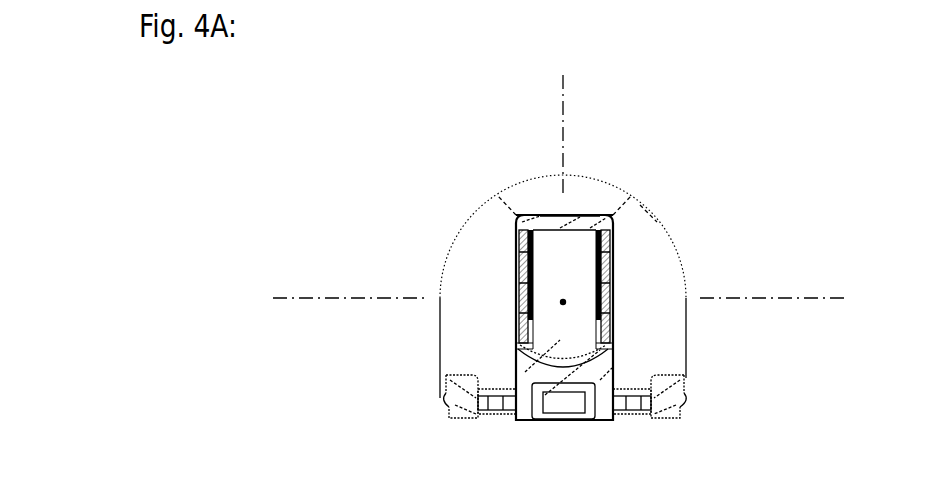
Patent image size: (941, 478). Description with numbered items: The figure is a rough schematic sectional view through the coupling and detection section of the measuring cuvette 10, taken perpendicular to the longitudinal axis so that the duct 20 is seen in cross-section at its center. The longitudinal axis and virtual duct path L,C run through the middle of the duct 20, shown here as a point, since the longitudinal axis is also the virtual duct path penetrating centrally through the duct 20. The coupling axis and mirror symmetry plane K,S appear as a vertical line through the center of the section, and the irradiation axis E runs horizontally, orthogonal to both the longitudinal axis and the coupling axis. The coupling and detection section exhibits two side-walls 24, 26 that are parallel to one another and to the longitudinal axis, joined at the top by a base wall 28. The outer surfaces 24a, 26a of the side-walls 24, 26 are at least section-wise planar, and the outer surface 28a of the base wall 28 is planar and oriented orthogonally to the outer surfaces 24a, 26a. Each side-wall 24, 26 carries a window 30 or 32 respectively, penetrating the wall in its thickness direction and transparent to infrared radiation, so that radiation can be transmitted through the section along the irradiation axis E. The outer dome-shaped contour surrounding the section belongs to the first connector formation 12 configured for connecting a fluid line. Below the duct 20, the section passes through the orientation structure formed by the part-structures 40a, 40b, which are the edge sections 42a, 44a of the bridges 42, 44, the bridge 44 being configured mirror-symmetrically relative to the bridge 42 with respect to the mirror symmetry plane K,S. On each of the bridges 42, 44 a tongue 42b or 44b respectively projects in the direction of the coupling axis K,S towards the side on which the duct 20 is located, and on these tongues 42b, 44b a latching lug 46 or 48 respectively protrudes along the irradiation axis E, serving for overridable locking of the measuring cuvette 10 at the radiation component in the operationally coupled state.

The measuring cuvette 10 is at (521, 262).
The first connector formation 12 is at (640, 203).
The duct 20 is at (580, 287).
The side-wall 24 is at (640, 286).
The outer surface of side-wall 24a is at (615, 344).
The side-wall 26 is at (489, 286).
The outer surface of side-wall 26a is at (516, 346).
The base wall 28 is at (575, 215).
The outer surface of base wall 28a is at (554, 201).
The window 30 is at (606, 256).
The window 32 is at (518, 257).
The part-structure 40a is at (672, 406).
The part-structure 40b is at (449, 408).
The bridge 42 is at (712, 420).
The edge section 42a is at (793, 446).
The tongue 42b is at (665, 380).
The bridge 44 is at (412, 415).
The edge section 44a is at (371, 444).
The tongue 44b is at (462, 376).
The latching lug 46 is at (682, 401).
The latching lug 48 is at (447, 403).
The coupling axis and mirror symmetry plane K,S is at (560, 132).
The longitudinal axis and virtual duct path L,C is at (562, 304).
The irradiation axis E is at (300, 298).